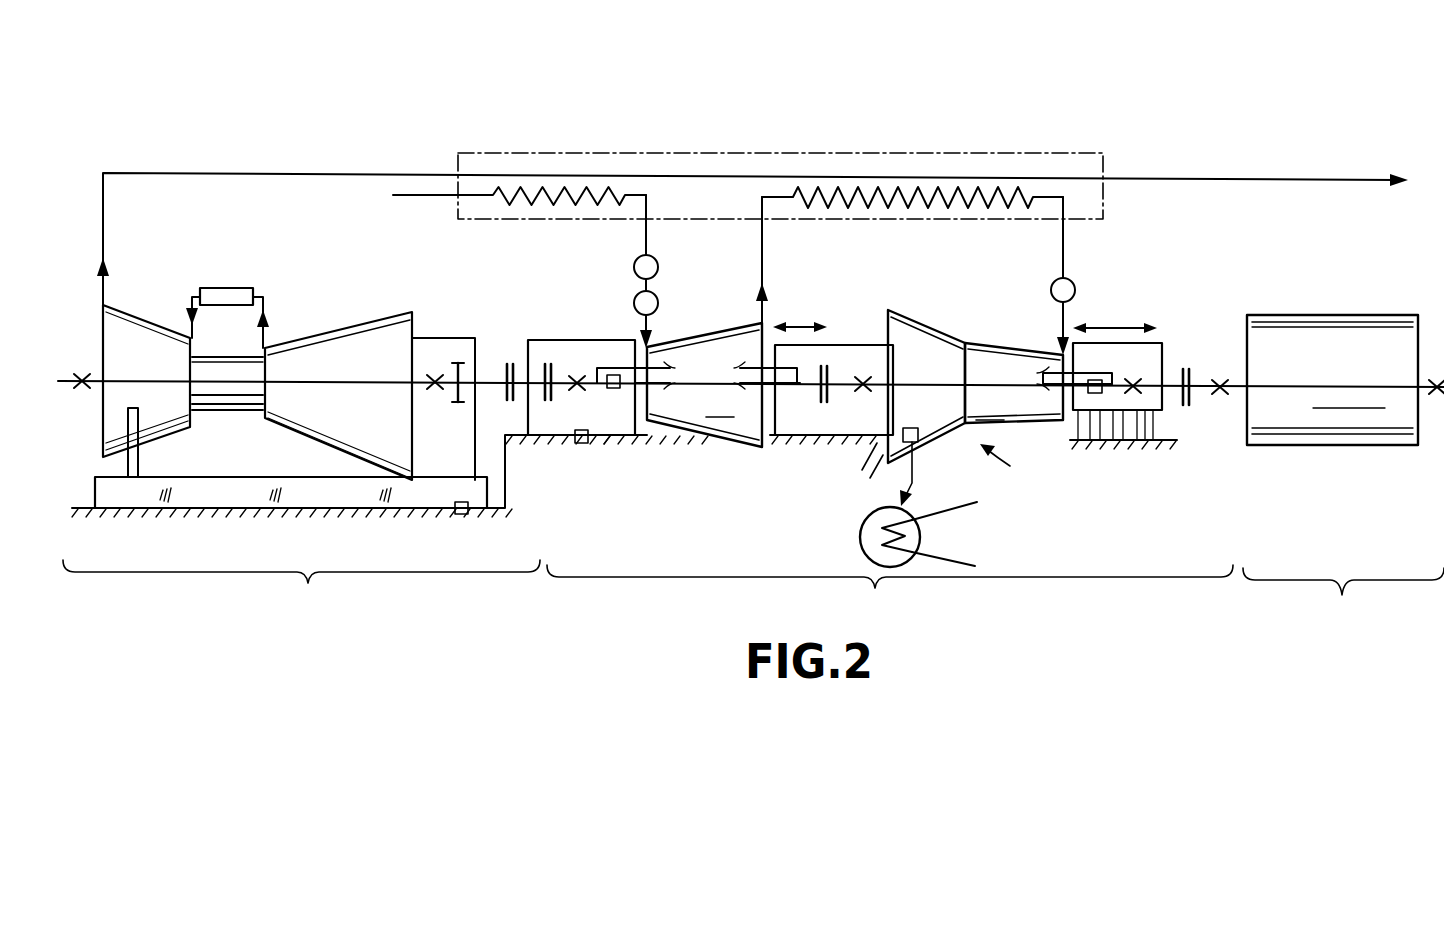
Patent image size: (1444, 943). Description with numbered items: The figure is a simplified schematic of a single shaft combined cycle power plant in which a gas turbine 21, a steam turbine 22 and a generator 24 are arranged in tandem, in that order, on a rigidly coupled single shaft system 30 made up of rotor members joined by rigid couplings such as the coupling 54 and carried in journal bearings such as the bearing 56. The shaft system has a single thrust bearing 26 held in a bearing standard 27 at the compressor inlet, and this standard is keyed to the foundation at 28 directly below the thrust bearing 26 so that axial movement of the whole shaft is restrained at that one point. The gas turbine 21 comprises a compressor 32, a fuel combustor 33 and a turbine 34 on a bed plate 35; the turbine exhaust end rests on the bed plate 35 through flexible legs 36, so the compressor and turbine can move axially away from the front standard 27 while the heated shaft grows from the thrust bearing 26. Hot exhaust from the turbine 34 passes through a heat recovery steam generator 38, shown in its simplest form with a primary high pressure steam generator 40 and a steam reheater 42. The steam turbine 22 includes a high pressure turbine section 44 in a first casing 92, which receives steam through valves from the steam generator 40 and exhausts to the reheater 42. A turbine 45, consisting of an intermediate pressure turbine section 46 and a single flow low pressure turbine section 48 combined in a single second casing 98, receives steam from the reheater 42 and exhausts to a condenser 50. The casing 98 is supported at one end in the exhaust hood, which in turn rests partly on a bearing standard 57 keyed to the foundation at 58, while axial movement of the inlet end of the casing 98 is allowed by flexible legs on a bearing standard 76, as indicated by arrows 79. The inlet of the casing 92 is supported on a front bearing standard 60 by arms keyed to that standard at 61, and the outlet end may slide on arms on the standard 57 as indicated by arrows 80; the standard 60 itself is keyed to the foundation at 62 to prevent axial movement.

The gas turbine 21 is at (301, 586).
The steam turbine 22 is at (890, 591).
The generator 24 is at (1343, 470).
The thrust bearing 26 is at (462, 367).
The bearing standard 27 is at (478, 419).
The foundation key 28 is at (463, 515).
The single shaft system 30 is at (515, 378).
The compressor 32 is at (357, 327).
The fuel combustor 33 is at (226, 295).
The turbine 34 is at (140, 322).
The bed plate 35 is at (213, 482).
The flexible legs 36 is at (106, 424).
The heat recovery steam generator 38 is at (714, 154).
The primary high pressure steam generator 40 is at (565, 190).
The steam reheater 42 is at (913, 190).
The high pressure turbine section 44 is at (706, 441).
The turbine 45 is at (1010, 465).
The intermediate pressure turbine section 46 is at (1021, 338).
The single flow low pressure turbine section 48 is at (933, 327).
The condenser 50 is at (921, 535).
The rigid coupling 54 is at (1190, 364).
The journal bearing 56 is at (1222, 398).
The bearing standard 57 is at (862, 344).
The foundation key 58 is at (919, 441).
The front bearing standard 60 is at (556, 331).
The standard key 61 is at (615, 390).
The foundation key 62 is at (579, 444).
The bearing standard 76 is at (1157, 343).
The arrows 79 is at (1119, 314).
The arrows 80 is at (792, 322).
The first casing 92 is at (720, 405).
The second casing 98 is at (990, 408).